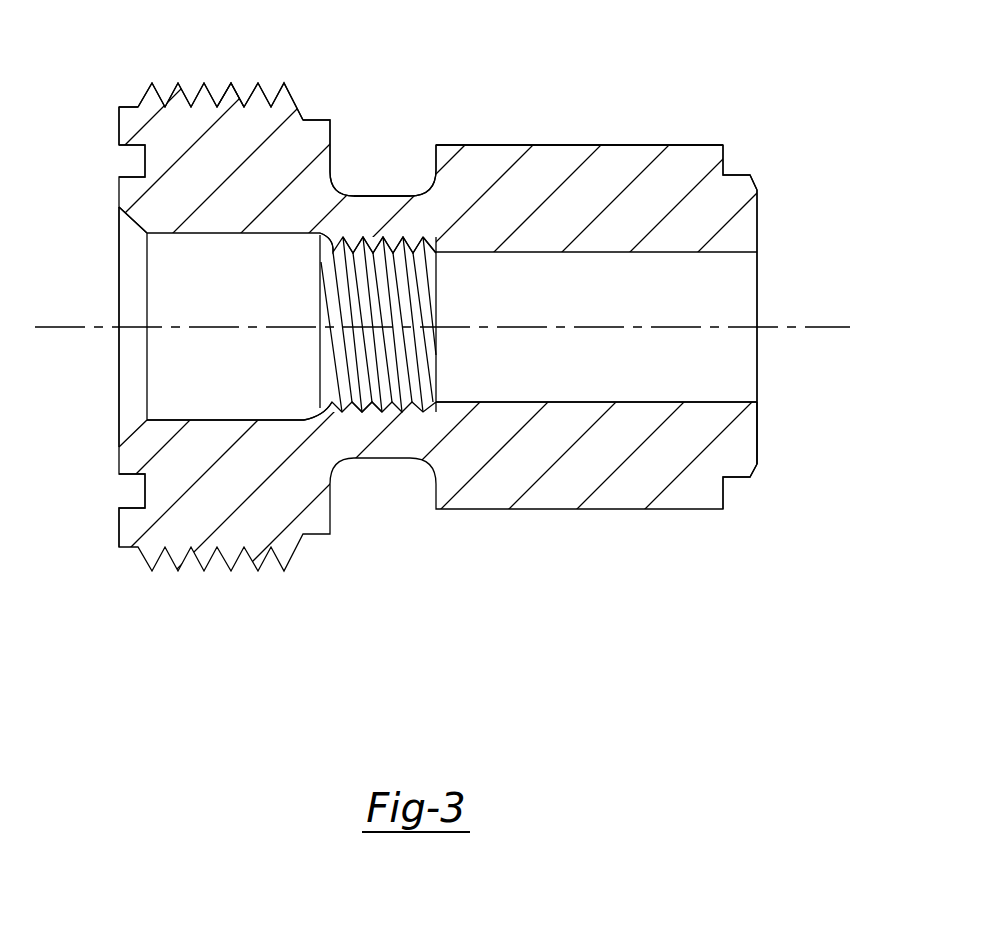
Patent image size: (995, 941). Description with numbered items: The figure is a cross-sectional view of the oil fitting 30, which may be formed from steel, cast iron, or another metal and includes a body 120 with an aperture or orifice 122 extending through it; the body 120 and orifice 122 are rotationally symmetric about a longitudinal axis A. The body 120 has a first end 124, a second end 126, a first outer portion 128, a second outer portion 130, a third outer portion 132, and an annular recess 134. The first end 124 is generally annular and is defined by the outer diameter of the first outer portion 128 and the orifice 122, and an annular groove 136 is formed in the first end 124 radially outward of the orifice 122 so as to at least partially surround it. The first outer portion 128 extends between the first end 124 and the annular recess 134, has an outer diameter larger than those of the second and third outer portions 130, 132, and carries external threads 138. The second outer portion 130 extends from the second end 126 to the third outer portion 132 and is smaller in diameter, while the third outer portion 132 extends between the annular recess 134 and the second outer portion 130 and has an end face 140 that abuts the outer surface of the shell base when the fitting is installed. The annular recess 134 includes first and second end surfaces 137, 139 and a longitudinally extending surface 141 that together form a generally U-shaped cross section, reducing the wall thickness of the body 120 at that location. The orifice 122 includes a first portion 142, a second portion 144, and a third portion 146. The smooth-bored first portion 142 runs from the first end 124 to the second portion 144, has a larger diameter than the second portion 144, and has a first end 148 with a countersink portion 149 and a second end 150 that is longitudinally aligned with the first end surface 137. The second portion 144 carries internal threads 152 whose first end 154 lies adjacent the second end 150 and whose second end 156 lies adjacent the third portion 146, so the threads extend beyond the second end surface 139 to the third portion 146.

The oil fitting 30 is at (662, 95).
The body 120 is at (113, 122).
The orifice 122 is at (770, 390).
The first end 124 is at (118, 526).
The second end 126 is at (757, 223).
The first outer portion 128 is at (200, 80).
The second outer portion 130 is at (737, 174).
The third outer portion 132 is at (575, 144).
The annular recess 134 is at (396, 185).
The annular groove 136 is at (125, 146).
The first end surface 137 is at (338, 127).
The external threads 138 is at (236, 88).
The second end surface 139 is at (436, 158).
The end face 140 is at (727, 492).
The longitudinally extending surface 141 is at (368, 195).
The first portion 142 is at (215, 410).
The second portion 144 is at (449, 353).
The third portion 146 is at (700, 400).
The first end 148 is at (133, 364).
The countersink portion 149 is at (137, 227).
The second end 150 is at (315, 412).
The internal threads 152 is at (372, 414).
The first end 154 is at (322, 249).
The second end 156 is at (437, 254).
The longitudinal axis A is at (787, 327).